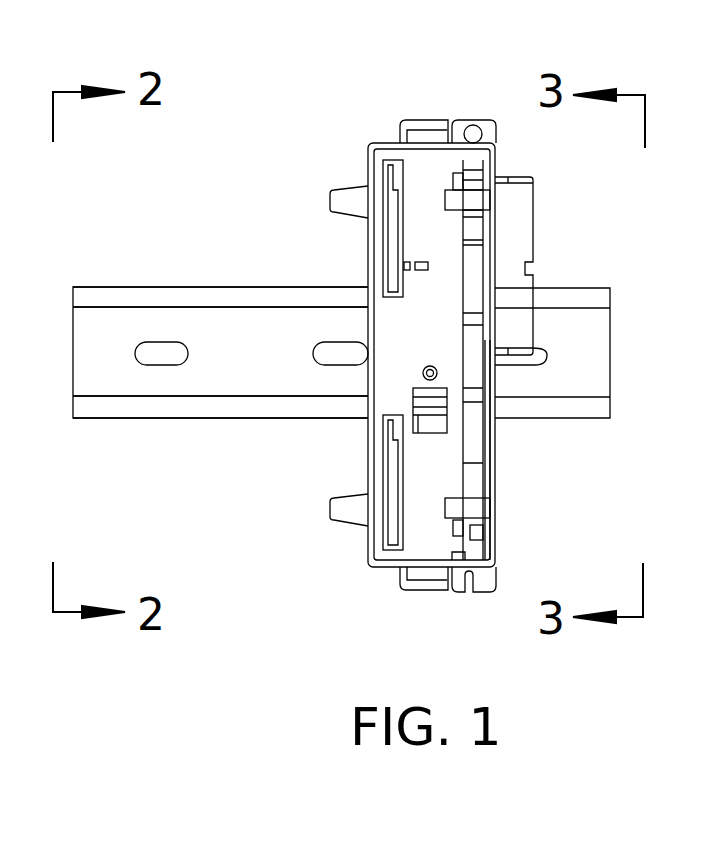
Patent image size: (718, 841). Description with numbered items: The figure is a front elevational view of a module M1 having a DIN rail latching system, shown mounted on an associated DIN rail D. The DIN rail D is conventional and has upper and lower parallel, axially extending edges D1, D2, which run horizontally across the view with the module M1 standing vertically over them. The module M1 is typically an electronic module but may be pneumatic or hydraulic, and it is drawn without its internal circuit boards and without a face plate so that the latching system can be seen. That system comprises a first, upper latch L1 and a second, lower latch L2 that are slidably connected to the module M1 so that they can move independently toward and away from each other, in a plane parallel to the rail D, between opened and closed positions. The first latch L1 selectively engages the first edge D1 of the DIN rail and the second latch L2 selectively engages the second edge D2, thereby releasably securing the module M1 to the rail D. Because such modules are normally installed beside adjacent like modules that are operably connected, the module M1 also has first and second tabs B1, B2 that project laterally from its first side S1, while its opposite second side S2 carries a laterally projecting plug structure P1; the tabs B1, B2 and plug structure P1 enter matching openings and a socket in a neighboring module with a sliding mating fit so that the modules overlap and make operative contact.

The DIN rail D is at (582, 343).
The first edge D1 is at (230, 286).
The second edge D2 is at (240, 421).
The module M1 is at (428, 181).
The first side S1 is at (368, 255).
The second side S2 is at (495, 462).
The first latch L1 is at (403, 119).
The second latch L2 is at (438, 597).
The first tab B1 is at (339, 185).
The second tab B2 is at (347, 514).
The plug structure P1 is at (546, 227).